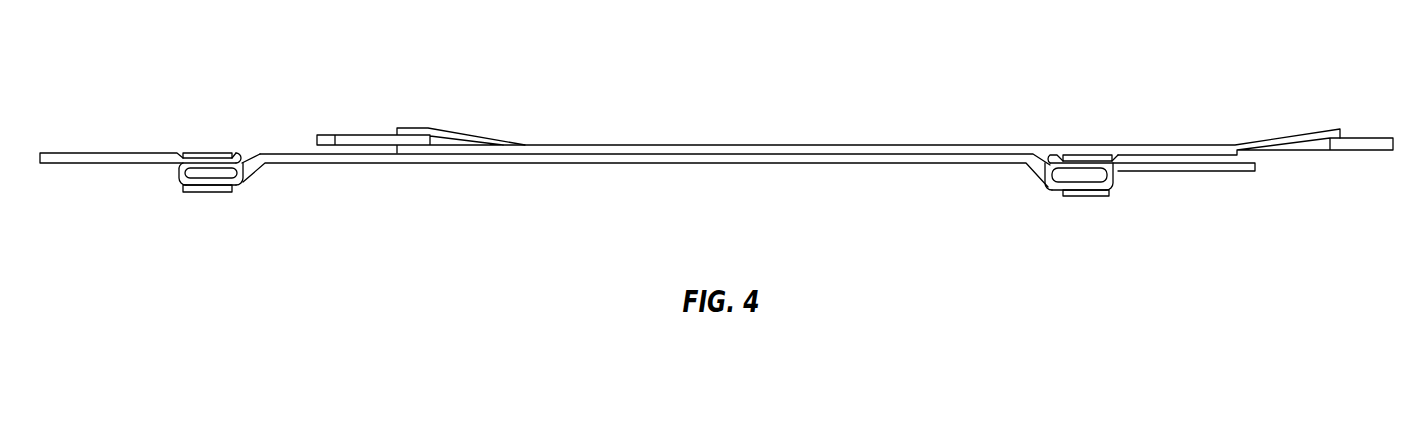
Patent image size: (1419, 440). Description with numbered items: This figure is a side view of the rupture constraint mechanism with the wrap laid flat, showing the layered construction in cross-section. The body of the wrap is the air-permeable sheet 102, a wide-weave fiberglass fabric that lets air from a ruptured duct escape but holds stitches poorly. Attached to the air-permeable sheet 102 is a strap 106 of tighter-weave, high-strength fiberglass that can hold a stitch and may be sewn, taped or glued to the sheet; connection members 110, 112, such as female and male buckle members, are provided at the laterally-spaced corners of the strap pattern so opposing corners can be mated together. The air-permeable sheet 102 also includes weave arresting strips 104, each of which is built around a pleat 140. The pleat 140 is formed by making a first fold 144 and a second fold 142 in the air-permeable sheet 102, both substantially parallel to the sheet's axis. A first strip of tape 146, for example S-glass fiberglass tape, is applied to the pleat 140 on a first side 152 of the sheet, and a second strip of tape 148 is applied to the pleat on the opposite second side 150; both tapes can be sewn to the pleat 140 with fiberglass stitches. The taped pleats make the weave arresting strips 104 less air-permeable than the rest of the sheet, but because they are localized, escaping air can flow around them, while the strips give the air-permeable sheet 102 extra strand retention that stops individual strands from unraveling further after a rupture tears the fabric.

The air-permeable sheet 102 is at (110, 163).
The weave arresting strip 104 is at (215, 202).
The strap 106 is at (663, 139).
The connection member 110 is at (1358, 152).
The connection member 112 is at (357, 147).
The pleat 140 is at (160, 202).
The second fold 142 is at (242, 160).
The first fold 144 is at (178, 172).
The first strip of tape 146 is at (212, 153).
The second strip of tape 148 is at (195, 194).
The second side 150 is at (481, 174).
The first side 152 is at (258, 112).